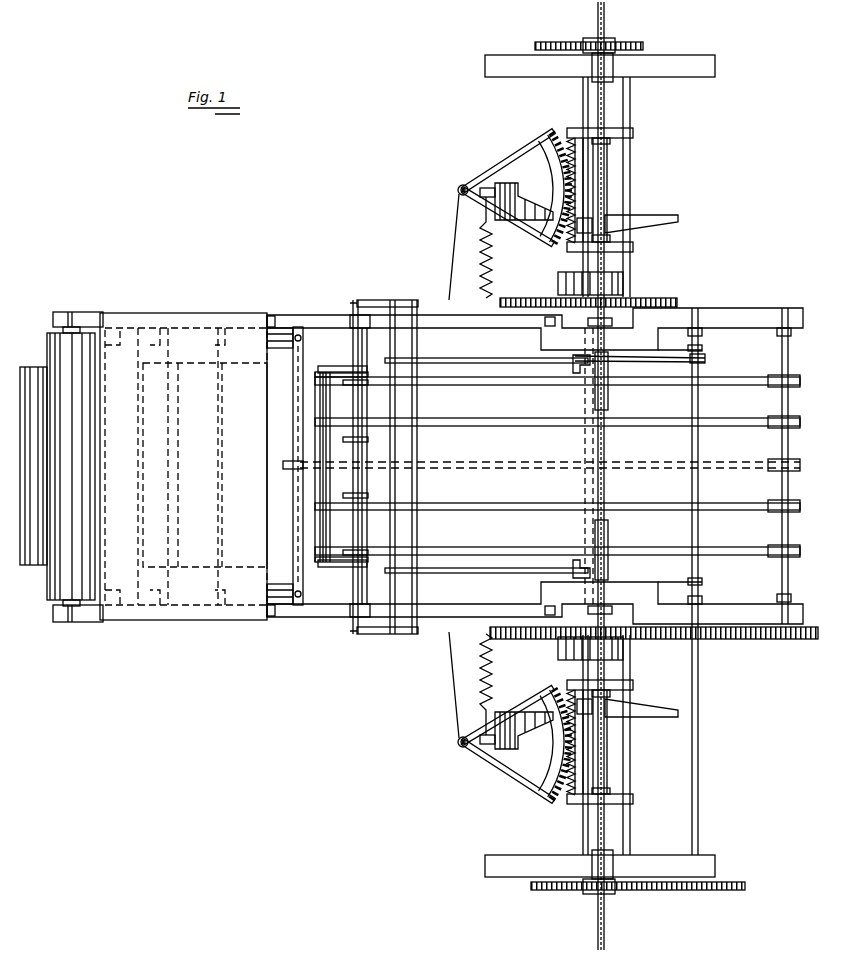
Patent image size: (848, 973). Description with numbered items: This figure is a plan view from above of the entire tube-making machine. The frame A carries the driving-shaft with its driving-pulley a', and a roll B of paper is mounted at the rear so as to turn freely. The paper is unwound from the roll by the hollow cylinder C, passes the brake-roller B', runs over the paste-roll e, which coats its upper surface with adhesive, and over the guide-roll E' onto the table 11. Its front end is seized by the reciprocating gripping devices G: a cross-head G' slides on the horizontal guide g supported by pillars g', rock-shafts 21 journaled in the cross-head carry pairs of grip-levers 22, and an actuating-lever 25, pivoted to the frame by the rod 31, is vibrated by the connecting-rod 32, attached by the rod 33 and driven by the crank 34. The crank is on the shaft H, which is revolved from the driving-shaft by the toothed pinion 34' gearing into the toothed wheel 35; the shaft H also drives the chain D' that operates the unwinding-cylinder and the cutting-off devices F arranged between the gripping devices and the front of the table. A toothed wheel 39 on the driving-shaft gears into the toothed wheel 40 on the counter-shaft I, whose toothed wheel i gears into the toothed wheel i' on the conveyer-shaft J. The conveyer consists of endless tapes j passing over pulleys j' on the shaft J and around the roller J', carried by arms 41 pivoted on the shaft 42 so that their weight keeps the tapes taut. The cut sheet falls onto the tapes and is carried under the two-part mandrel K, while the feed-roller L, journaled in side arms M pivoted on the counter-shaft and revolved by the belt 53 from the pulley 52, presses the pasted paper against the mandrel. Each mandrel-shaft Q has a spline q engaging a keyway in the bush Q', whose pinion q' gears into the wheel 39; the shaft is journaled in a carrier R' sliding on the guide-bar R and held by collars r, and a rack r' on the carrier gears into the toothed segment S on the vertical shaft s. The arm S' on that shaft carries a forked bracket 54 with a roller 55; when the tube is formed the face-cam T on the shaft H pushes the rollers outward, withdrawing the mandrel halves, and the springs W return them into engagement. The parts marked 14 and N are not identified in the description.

The frame A is at (298, 637).
The roll of paper B is at (33, 466).
The brake-roller B' is at (172, 605).
The hollow cylinder C is at (246, 557).
The guide-roll E' is at (71, 466).
The paste-roll e is at (115, 590).
The table 11 is at (186, 466).
The bracket 14 is at (272, 348).
The cutting-off devices F is at (293, 484).
The gripping devices G is at (350, 467).
The cross-head G' is at (352, 462).
The horizontal guide g is at (535, 469).
The pillars g' is at (404, 470).
The rock-shafts 21 is at (355, 575).
The grip-levers 22 is at (348, 550).
The actuating-lever 25 is at (386, 300).
The rod 31 is at (417, 536).
The connecting-rod 32 is at (486, 465).
The rod 33 is at (394, 467).
The crank 34 is at (571, 466).
The toothed pinion 34' is at (548, 472).
The toothed wheel 35 is at (515, 298).
The toothed wheel 39 is at (562, 43).
The toothed wheel 40 is at (674, 890).
The arms 41 is at (342, 467).
The shaft 42 is at (366, 340).
The belt-pulley 52 is at (705, 358).
The driving-belt 53 is at (640, 366).
The forked bracket 54 is at (514, 200).
The roller 55 is at (490, 191).
The drive-chain D' is at (541, 456).
The shaft H is at (588, 442).
The counter-shaft I is at (699, 445).
The toothed wheel i is at (654, 641).
The toothed wheel i' is at (766, 648).
The conveyer-shaft J is at (790, 466).
The roller J' is at (341, 467).
The endless tapes j is at (557, 473).
The pulleys j' is at (789, 466).
The mandrel K is at (607, 405).
The feed-roller L is at (605, 490).
The side arms M is at (678, 466).
The nut N is at (606, 443).
The mandrel-shaft Q is at (628, 466).
The bush Q' is at (622, 453).
The spline q is at (623, 476).
The toothed pinion q' is at (605, 467).
The guide-bar R is at (611, 466).
The carrier R' is at (595, 474).
The collars r is at (627, 466).
The toothed rack r' is at (550, 535).
The toothed segment S is at (547, 466).
The arm S' is at (508, 466).
The vertical shaft s is at (458, 191).
The face-cam T is at (524, 466).
The springs W is at (494, 466).
The driving-pulley a' is at (610, 464).